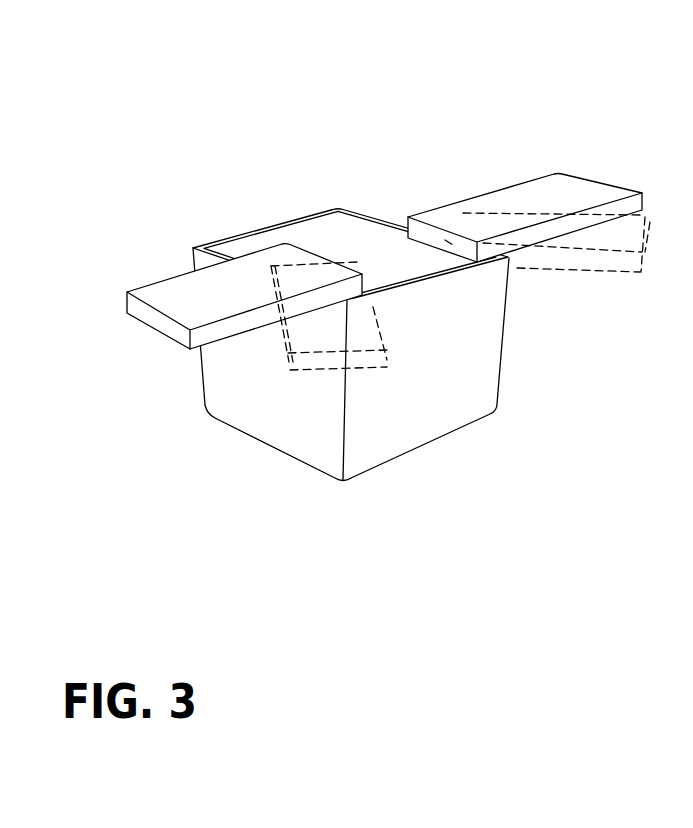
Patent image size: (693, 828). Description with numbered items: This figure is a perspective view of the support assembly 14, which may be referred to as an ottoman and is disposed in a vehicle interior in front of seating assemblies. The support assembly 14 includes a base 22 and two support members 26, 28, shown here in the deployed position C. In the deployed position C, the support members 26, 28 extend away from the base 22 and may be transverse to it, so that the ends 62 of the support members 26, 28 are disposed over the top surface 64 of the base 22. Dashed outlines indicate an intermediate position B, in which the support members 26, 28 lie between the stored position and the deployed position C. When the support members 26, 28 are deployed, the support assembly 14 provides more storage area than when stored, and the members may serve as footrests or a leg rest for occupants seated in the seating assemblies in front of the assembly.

The support assembly 14 is at (361, 274).
The base 22 is at (410, 410).
The support member 26 is at (510, 197).
The support member 28 is at (180, 282).
The ends of the support members 62 is at (298, 262).
The top surface of the base 64 is at (369, 237).
The intermediate position B is at (600, 282).
The deployed position C is at (594, 172).